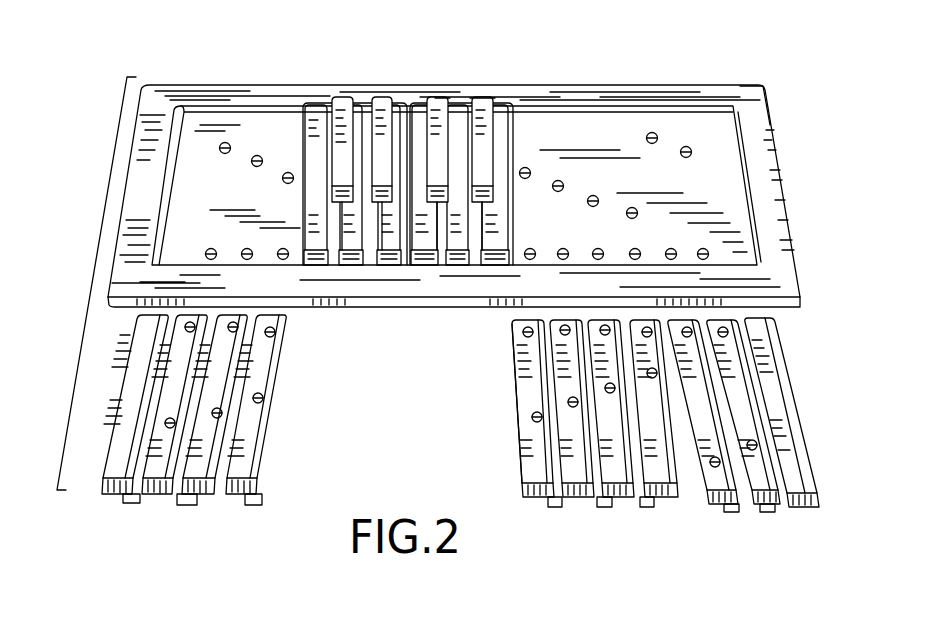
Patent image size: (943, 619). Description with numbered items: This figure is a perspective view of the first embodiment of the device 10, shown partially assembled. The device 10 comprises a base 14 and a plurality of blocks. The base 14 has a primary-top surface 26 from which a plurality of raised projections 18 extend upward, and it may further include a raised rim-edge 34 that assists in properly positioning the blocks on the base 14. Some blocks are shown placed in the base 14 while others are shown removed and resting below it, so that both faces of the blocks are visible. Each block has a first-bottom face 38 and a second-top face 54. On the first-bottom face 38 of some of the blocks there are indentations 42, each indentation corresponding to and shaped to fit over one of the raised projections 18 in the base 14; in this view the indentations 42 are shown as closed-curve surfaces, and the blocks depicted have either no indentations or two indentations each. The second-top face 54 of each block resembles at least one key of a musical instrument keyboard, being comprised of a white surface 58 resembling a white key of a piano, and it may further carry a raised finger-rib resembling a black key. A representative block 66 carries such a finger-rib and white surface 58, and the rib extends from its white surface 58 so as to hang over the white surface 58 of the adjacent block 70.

The device 10 is at (95, 262).
The base 14 is at (783, 153).
The raised projections 18 is at (652, 134).
The primary-top surface 26 is at (243, 120).
The raised rim-edge 34 is at (767, 97).
The first-bottom face 38 is at (258, 425).
The indentations 42 is at (532, 415).
The second-top face 54 is at (428, 233).
The white surface 58 is at (320, 105).
The representative block 66 is at (735, 512).
The adjacent block 70 is at (765, 512).